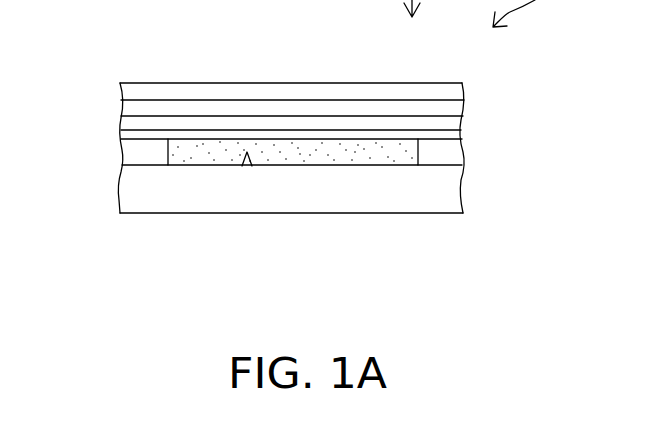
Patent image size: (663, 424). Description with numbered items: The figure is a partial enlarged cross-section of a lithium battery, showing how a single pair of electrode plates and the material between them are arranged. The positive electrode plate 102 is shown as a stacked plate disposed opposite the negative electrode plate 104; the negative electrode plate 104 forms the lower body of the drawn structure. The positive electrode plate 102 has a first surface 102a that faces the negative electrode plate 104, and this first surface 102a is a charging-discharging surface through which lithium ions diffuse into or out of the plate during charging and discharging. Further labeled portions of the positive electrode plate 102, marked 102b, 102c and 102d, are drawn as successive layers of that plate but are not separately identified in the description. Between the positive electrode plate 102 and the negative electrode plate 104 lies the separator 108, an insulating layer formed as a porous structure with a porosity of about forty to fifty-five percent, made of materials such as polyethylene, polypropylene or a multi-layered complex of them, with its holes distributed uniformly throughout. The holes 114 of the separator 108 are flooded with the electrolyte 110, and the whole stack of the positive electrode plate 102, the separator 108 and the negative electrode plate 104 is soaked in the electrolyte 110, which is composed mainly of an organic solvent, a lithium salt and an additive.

The positive electrode plate 102 is at (585, 58).
The first surface 102a is at (456, 135).
The second layer 102b is at (454, 120).
The third layer 102c is at (454, 108).
The fourth layer 102d is at (455, 90).
The negative electrode plate 104 is at (178, 198).
The separator 108 is at (133, 152).
The electrolyte 110 is at (385, 150).
The holes 114 is at (247, 152).